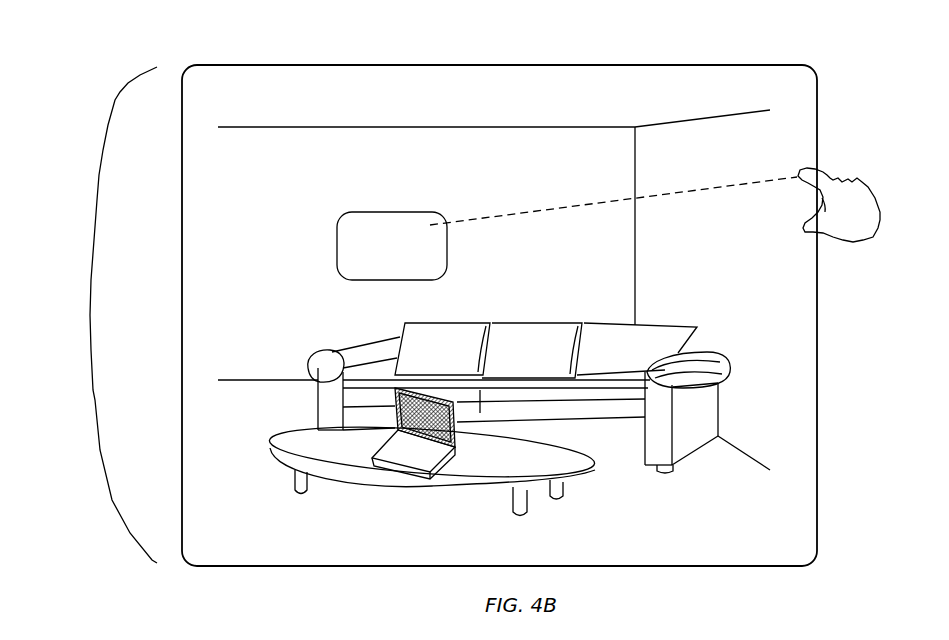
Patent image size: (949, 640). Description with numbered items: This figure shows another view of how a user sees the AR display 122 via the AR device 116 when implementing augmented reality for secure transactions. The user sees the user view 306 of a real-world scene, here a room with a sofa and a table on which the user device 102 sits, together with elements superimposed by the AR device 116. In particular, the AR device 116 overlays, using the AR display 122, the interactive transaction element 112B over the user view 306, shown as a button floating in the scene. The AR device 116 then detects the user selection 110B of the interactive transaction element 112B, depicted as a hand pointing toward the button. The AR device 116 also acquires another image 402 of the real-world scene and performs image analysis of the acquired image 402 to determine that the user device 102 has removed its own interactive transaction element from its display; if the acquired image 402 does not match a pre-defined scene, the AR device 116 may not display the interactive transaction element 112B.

The user view 306 is at (495, 65).
The AR display 122 is at (90, 315).
The AR device 116 is at (17, 639).
The acquired image 402 is at (577, 368).
The user device 102 is at (393, 473).
The interactive transaction element 112B is at (340, 237).
The user selection 110B is at (866, 180).